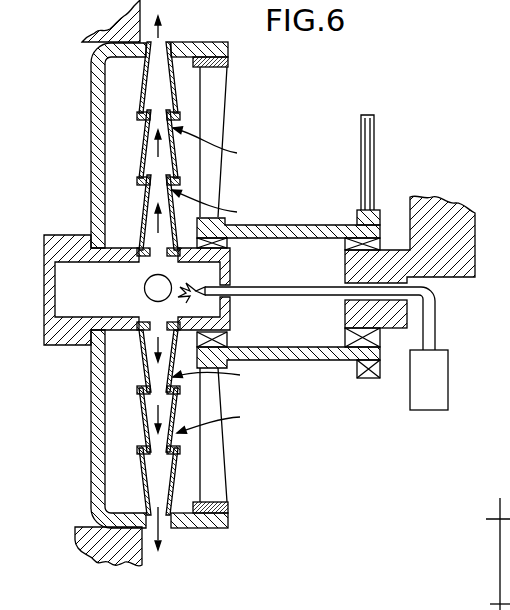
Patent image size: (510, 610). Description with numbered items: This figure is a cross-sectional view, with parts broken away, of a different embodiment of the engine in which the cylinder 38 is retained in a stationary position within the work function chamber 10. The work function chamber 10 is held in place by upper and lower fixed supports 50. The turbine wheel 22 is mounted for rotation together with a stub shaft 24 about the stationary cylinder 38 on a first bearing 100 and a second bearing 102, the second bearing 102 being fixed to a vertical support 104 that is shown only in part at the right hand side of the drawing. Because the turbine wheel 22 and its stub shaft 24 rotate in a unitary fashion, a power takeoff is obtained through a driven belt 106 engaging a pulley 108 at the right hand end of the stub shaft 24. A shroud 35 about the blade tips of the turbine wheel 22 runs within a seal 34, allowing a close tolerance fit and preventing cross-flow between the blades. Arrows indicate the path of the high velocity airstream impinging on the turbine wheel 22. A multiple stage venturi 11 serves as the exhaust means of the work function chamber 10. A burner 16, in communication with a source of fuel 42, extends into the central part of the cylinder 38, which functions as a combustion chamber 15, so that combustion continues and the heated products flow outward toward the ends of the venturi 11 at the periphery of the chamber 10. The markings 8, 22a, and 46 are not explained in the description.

The work function chamber 10 is at (88, 174).
The multiple stage venturi 11 is at (138, 170).
The combustion chamber 15 is at (88, 289).
The burner 16 is at (293, 293).
The turbine wheel 22 is at (237, 108).
The stub shaft 24 is at (262, 226).
The seal 34 is at (228, 506).
The shroud 35 is at (228, 63).
The cylinder 38 is at (45, 323).
The source of fuel 42 is at (441, 393).
The nozzle 46 is at (144, 288).
The fixed supports 50 is at (138, 13).
The first bearing 100 is at (228, 246).
The second bearing 102 is at (345, 245).
The vertical support 104 is at (438, 206).
The driven belt 106 is at (375, 133).
The pulley 108 is at (360, 373).
The section line 8 is at (486, 554).
The tube portion 22a is at (483, 601).